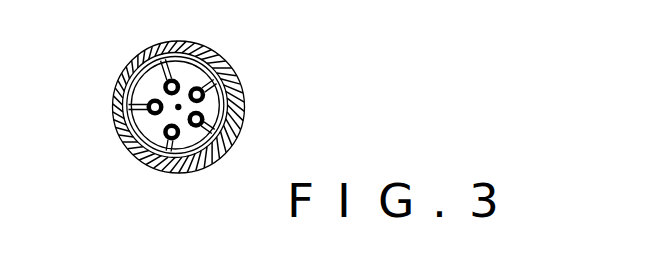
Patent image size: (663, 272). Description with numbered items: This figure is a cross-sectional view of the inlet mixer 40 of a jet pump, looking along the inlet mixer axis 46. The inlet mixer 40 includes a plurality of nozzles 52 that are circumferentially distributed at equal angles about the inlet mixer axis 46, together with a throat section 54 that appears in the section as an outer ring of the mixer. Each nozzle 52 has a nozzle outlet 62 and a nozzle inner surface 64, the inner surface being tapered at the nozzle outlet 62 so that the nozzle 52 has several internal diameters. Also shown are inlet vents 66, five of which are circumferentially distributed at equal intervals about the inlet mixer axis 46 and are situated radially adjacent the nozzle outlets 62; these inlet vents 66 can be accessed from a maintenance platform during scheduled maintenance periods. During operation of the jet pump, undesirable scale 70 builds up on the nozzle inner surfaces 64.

The inlet mixer 40 is at (215, 96).
The inlet mixer axis 46 is at (180, 105).
The nozzle 52 is at (148, 84).
The throat section 54 is at (213, 160).
The nozzle outlet 62 is at (218, 70).
The nozzle inner surface 64 is at (200, 121).
The inlet vent 66 is at (233, 88).
The scale 70 is at (148, 133).